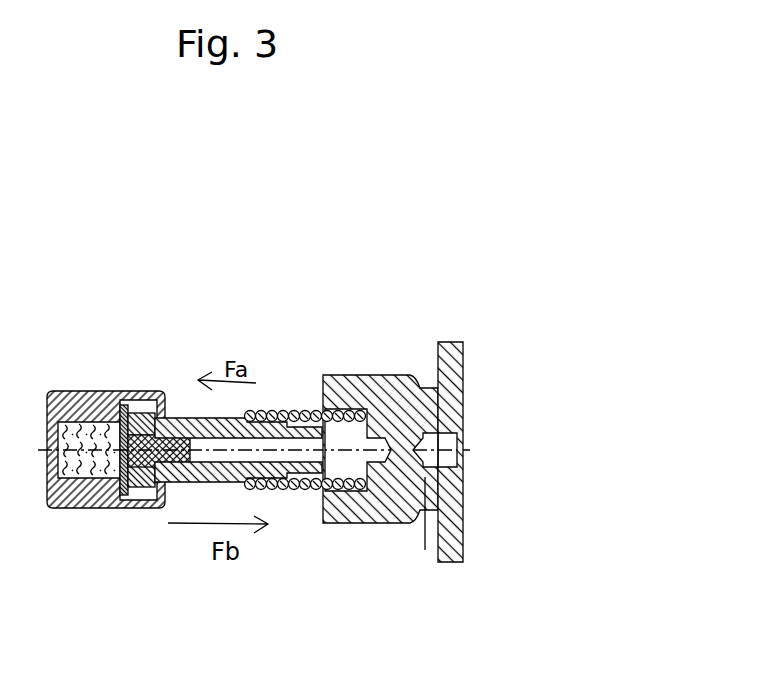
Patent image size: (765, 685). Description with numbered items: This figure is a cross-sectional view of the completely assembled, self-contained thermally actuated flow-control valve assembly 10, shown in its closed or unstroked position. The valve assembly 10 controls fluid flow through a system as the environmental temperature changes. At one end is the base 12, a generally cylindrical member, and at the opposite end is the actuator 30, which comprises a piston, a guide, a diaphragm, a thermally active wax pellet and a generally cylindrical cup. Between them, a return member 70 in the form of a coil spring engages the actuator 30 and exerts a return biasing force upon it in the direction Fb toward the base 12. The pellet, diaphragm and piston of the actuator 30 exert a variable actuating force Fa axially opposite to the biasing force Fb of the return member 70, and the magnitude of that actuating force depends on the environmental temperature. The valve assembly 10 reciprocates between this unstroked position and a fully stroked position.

The valve assembly 10 is at (225, 330).
The base 12 is at (385, 533).
The actuator 30 is at (112, 512).
The return member 70 is at (272, 405).